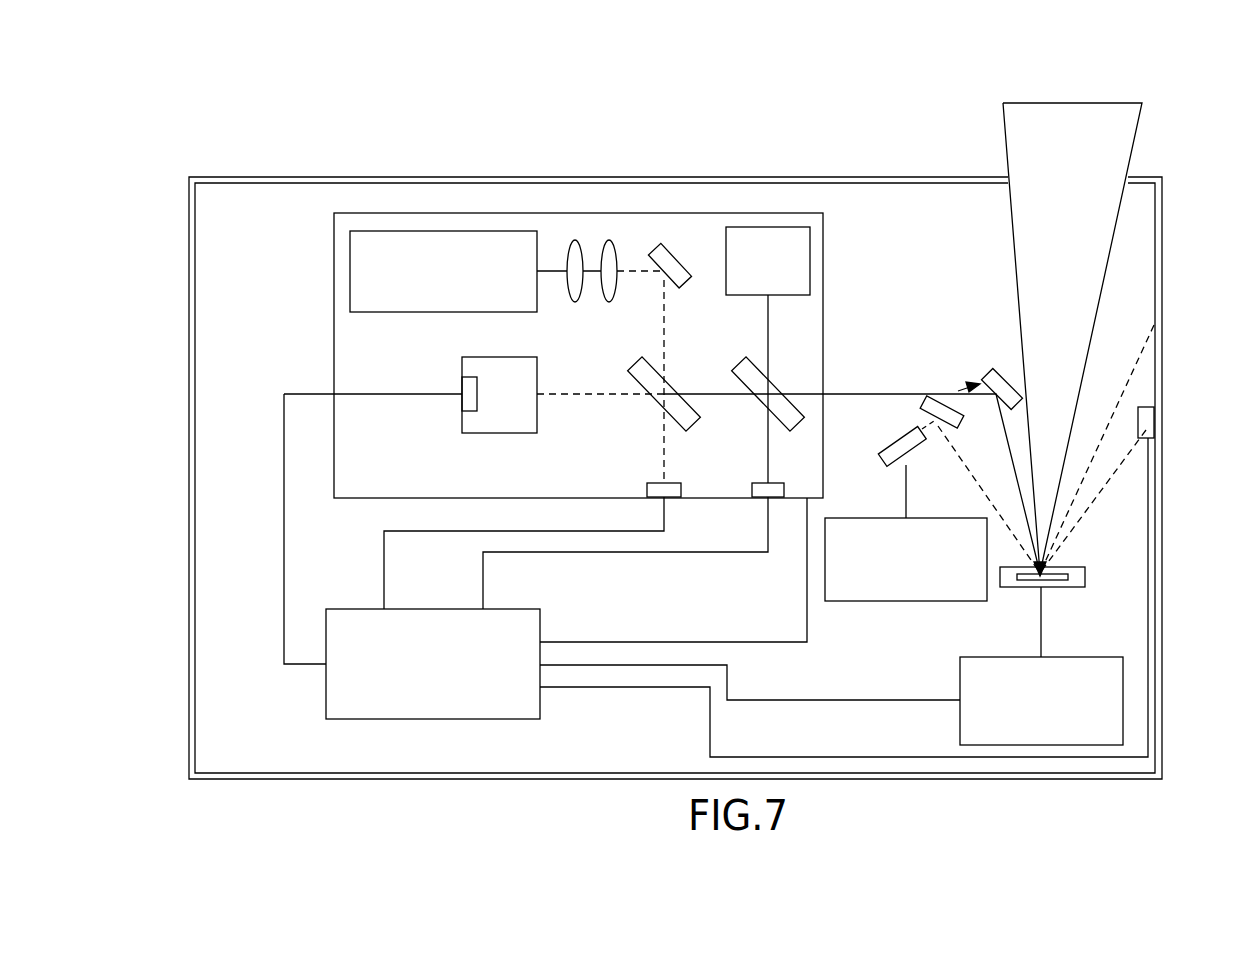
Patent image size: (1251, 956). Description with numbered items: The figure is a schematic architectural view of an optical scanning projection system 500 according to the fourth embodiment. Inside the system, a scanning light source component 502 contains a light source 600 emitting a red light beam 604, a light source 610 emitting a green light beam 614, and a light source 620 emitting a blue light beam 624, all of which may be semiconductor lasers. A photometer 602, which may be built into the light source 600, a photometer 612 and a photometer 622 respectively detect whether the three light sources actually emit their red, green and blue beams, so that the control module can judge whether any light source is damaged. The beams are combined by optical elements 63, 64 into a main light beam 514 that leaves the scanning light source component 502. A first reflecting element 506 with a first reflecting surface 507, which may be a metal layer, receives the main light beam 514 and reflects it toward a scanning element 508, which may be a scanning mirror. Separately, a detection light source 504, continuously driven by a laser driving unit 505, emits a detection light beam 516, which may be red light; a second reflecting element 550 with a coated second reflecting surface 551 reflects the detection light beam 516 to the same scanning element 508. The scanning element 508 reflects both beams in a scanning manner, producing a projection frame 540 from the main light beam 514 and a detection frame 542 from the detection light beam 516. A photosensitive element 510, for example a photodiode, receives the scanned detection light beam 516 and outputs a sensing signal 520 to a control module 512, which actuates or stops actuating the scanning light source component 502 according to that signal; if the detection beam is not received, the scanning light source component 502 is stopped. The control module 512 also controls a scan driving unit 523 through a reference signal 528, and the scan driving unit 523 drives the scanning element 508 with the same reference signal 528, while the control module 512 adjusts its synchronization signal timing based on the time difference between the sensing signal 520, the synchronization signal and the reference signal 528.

The optical scanning projection system 500 is at (185, 123).
The scanning light source component 502 is at (577, 213).
The detection light source 504 is at (881, 451).
The laser driving unit 505 is at (905, 603).
The first reflecting element 506 is at (990, 368).
The first reflecting surface 507 is at (966, 387).
The scanning element 508 is at (1087, 575).
The photosensitive element 510 is at (1154, 408).
The control module 512 is at (542, 622).
The main light beam 514 is at (870, 393).
The detection light beam 516 is at (963, 457).
The sensing signal 520 is at (802, 757).
The scan driving unit 523 is at (960, 717).
The reference signal 528 is at (1048, 608).
The projection frame 540 is at (1094, 92).
The detection frame 542 is at (1165, 360).
The second reflecting element 550 is at (962, 422).
The second reflecting surface 551 is at (923, 414).
The light source 600 is at (503, 436).
The photometer 602 is at (462, 385).
The red light beam 604 is at (594, 398).
The light source 610 is at (445, 312).
The photometer 612 is at (673, 481).
The green light beam 614 is at (650, 275).
The light source 620 is at (726, 240).
The photometer 622 is at (777, 481).
The blue light beam 624 is at (762, 445).
The beam splitter 63 is at (629, 360).
The beam splitter 64 is at (740, 360).